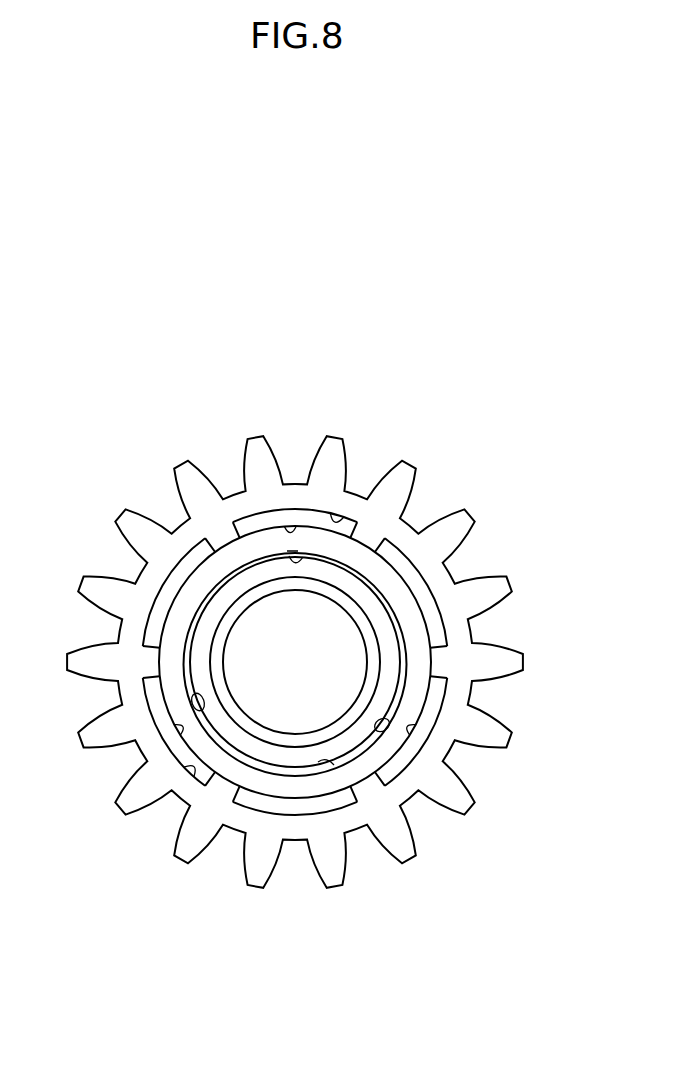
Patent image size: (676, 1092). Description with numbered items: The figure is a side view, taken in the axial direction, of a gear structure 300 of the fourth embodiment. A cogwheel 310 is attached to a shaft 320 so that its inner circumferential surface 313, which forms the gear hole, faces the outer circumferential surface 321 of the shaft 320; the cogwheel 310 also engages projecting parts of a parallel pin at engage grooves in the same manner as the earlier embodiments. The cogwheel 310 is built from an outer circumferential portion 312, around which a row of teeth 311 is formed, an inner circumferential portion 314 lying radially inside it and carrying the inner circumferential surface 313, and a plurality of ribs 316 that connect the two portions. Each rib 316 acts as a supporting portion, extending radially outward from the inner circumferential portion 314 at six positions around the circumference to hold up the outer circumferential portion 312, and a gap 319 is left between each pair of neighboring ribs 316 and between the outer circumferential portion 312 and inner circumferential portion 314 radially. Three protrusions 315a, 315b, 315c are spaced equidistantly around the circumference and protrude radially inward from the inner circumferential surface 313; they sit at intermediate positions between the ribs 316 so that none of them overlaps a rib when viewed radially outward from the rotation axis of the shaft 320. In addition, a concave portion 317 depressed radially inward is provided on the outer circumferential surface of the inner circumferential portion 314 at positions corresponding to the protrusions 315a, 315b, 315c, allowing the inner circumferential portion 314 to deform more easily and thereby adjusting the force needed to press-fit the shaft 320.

The gear structure 300 is at (103, 440).
The cogwheel 310 is at (478, 515).
The row of teeth 311 is at (360, 521).
The outer circumferential portion 312 is at (300, 832).
The inner circumferential surface 313 is at (330, 770).
The inner circumferential portion 314 is at (260, 790).
The protrusion 315a is at (287, 553).
The protrusion 315b is at (388, 729).
The protrusion 315c is at (193, 700).
The rib 316 is at (203, 543).
The concave portion 317 is at (180, 733).
The gap 319 is at (350, 510).
The shaft 320 is at (410, 640).
The outer circumferential surface 321 is at (383, 716).